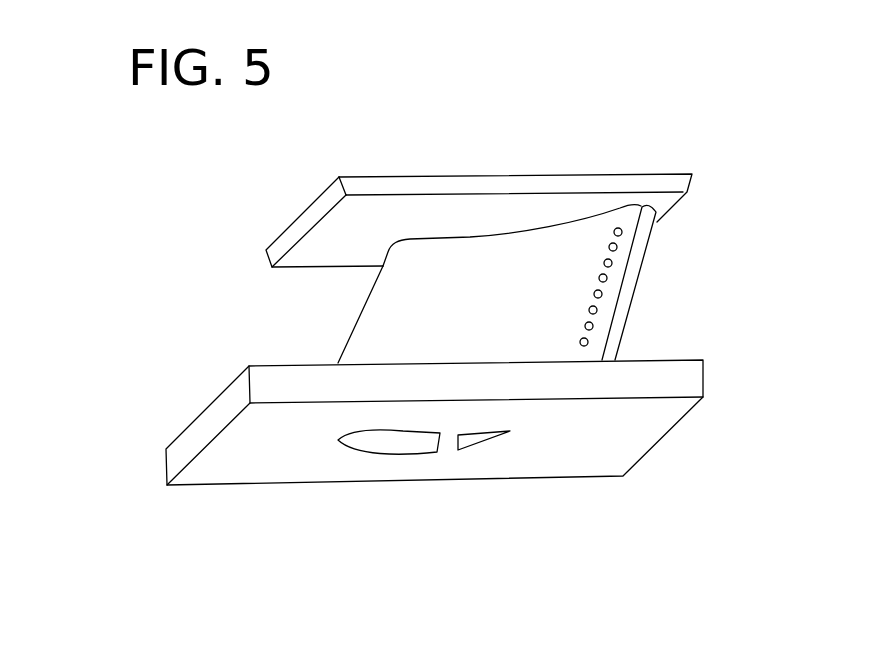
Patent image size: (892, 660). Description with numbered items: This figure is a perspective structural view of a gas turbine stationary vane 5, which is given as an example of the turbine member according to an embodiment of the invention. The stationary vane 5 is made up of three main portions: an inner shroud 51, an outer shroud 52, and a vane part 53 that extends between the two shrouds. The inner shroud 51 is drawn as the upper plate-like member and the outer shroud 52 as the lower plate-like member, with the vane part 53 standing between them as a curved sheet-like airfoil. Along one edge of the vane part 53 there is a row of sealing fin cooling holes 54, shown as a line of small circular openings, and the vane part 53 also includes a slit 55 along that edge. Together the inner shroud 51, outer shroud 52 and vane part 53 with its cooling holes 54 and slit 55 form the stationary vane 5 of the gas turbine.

The gas turbine stationary vane 5 is at (478, 116).
The inner shroud 51 is at (525, 183).
The outer shroud 52 is at (648, 377).
The vane part 53 is at (565, 302).
The sealing fin cooling holes 54 is at (617, 256).
The slit 55 is at (625, 337).